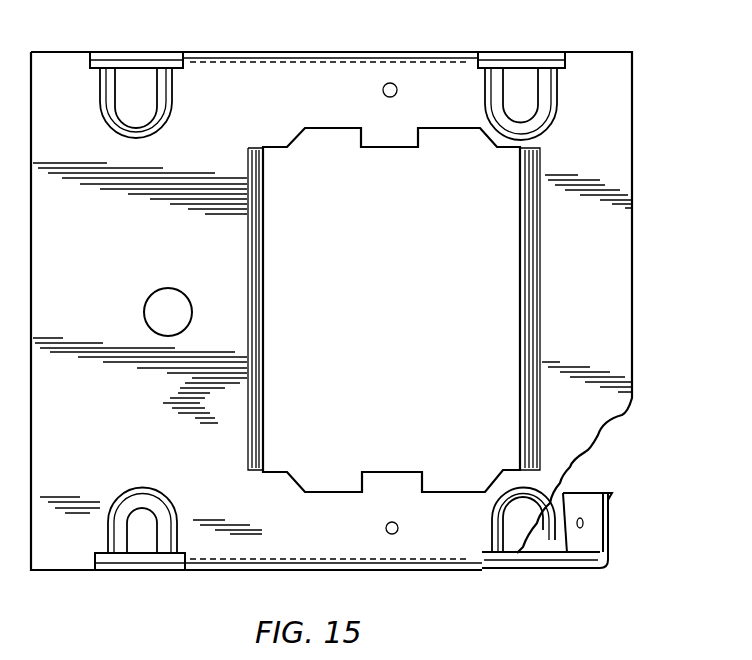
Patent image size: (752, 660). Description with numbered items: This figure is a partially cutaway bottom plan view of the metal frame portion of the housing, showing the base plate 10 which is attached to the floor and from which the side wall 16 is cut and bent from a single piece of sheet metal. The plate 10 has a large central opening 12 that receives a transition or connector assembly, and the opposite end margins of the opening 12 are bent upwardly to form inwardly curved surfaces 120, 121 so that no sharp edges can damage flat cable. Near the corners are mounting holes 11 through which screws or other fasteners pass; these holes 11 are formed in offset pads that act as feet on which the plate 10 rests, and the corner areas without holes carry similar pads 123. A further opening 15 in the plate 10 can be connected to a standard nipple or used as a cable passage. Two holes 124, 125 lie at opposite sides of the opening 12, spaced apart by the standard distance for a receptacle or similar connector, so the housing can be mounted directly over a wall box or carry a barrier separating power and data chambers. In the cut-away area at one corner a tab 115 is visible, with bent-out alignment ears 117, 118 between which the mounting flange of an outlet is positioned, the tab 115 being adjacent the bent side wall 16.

The base plate 10 is at (150, 406).
The mounting holes 11 is at (510, 82).
The central opening 12 is at (318, 138).
The opening 15 is at (158, 295).
The side wall 16 is at (520, 567).
The tab 115 is at (612, 519).
The alignment ear 117 is at (613, 492).
The alignment ear 118 is at (563, 503).
The inwardly curved surface 120 is at (260, 253).
The inwardly curved surface 121 is at (527, 244).
The pads 123 is at (147, 105).
The hole 124 is at (390, 83).
The hole 125 is at (385, 528).